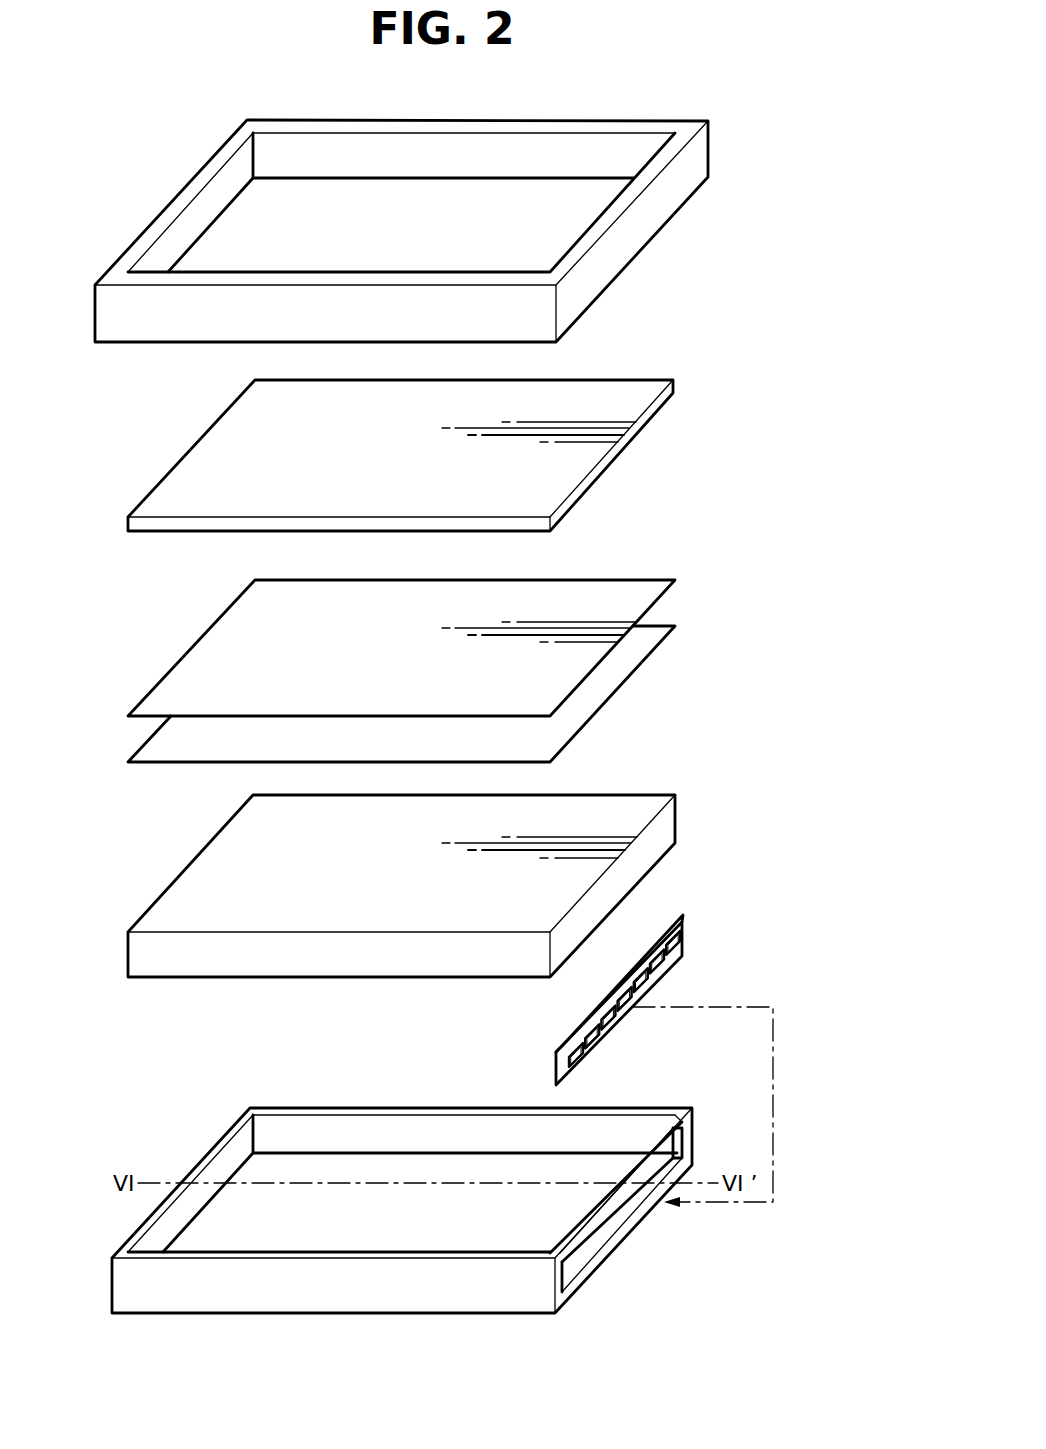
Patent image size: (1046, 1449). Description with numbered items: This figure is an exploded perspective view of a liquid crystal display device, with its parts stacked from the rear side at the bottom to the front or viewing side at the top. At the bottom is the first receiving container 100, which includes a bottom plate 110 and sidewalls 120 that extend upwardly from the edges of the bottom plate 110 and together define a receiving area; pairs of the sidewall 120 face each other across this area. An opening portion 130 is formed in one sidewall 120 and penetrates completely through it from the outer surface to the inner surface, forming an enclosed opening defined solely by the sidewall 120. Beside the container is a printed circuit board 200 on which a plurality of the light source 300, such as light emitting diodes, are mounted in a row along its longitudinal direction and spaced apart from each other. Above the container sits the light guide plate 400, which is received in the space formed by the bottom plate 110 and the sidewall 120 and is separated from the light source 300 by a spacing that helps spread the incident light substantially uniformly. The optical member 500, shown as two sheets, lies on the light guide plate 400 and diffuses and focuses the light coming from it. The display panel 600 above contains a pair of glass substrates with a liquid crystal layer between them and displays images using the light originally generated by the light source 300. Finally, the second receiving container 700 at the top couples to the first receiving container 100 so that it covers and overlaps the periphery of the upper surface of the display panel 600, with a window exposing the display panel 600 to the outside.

The first receiving container 100 is at (437, 1202).
The bottom plate 110 is at (300, 1172).
The sidewall 120 is at (543, 1253).
The opening portion 130 is at (578, 1255).
The printed circuit board 200 is at (666, 994).
The light source 300 is at (675, 943).
The light guide plate 400 is at (678, 812).
The optical member 500 is at (684, 581).
The display panel 600 is at (673, 383).
The second receiving container 700 is at (693, 160).